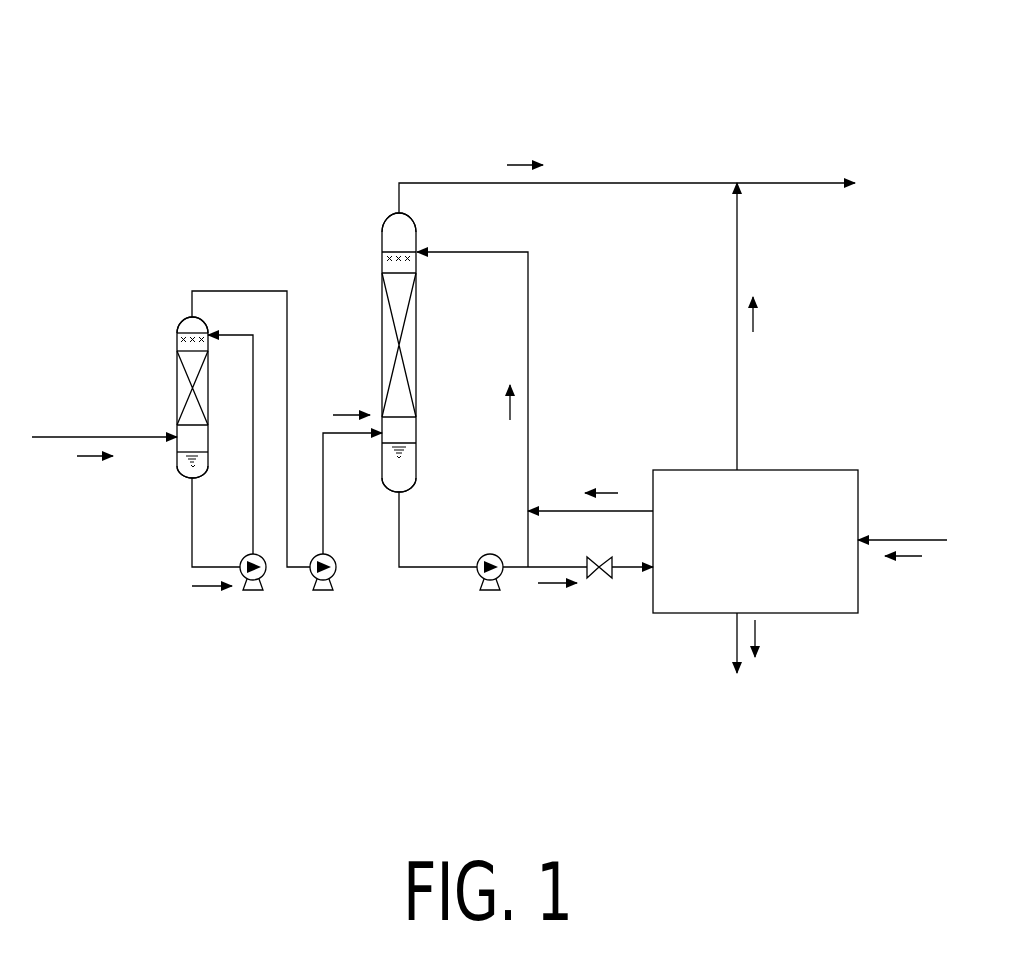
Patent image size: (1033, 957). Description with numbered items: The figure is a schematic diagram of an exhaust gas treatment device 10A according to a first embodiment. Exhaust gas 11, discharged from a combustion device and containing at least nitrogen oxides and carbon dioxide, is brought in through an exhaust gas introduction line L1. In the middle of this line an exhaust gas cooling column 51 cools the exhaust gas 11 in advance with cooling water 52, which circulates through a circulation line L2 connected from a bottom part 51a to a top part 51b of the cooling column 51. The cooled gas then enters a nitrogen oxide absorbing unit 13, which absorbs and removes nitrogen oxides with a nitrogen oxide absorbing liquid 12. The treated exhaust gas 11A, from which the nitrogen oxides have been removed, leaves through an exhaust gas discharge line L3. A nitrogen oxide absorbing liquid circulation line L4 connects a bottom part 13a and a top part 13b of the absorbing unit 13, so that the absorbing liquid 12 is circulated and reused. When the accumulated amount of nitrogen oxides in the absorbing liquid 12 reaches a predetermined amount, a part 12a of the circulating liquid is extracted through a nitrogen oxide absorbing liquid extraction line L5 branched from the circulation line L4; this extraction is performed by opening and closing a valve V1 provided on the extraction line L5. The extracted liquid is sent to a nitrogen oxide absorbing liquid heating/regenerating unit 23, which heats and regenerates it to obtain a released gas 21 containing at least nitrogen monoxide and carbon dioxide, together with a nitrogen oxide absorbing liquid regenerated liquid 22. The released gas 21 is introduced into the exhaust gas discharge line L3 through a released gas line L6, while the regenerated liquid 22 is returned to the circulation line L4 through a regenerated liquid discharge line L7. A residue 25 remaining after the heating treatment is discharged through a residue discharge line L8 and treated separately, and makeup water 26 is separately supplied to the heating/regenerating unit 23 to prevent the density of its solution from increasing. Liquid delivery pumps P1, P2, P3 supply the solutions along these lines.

The exhaust gas treatment device 10A is at (605, 72).
The exhaust gas 11 is at (88, 460).
The exhaust gas 11A is at (522, 165).
The nitrogen oxide absorbing liquid 12 is at (508, 418).
The part of the nitrogen oxide absorbing liquid 12a is at (555, 588).
The nitrogen oxide absorbing unit 13 is at (372, 200).
The bottom part 13a is at (417, 469).
The top part 13b is at (382, 239).
The released gas 21 is at (755, 320).
The nitrogen oxide absorbing liquid regenerated liquid 22 is at (607, 493).
The nitrogen oxide absorbing liquid heating/regenerating unit 23 is at (781, 450).
The residue 25 is at (757, 628).
The makeup water 26 is at (906, 562).
The exhaust gas cooling column 51 is at (170, 290).
The bottom part 51a is at (183, 478).
The top part 51b is at (177, 329).
The cooling water 52 is at (205, 590).
The exhaust gas introduction line L1 is at (238, 291).
The circulation line L2 is at (192, 561).
The exhaust gas discharge line L3 is at (684, 182).
The nitrogen oxide absorbing liquid circulation line L4 is at (425, 570).
The nitrogen oxide absorbing liquid extraction line L5 is at (624, 571).
The released gas line L6 is at (737, 360).
The regenerated liquid discharge line L7 is at (548, 511).
The residue discharge line L8 is at (737, 644).
The liquid delivery pump P1 is at (253, 592).
The liquid delivery pump P2 is at (323, 592).
The liquid delivery pump P3 is at (490, 592).
The valve V1 is at (596, 582).